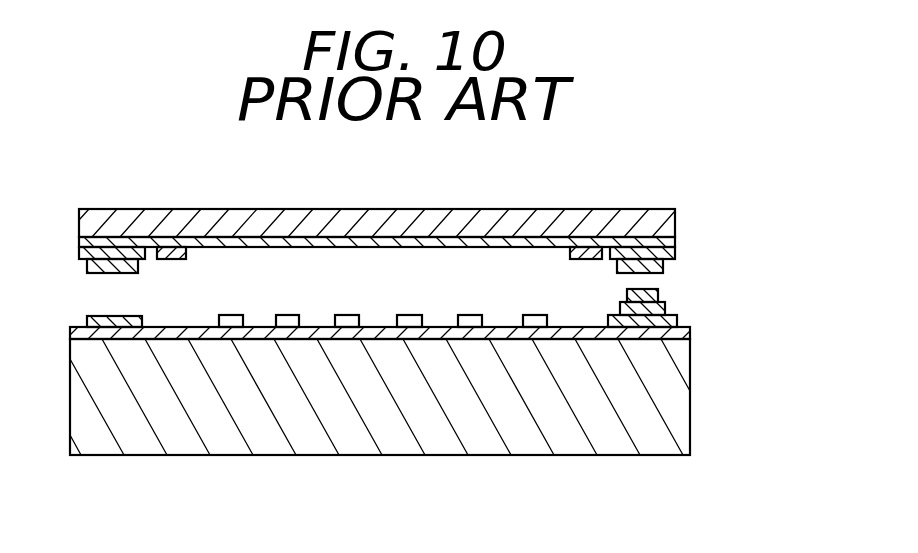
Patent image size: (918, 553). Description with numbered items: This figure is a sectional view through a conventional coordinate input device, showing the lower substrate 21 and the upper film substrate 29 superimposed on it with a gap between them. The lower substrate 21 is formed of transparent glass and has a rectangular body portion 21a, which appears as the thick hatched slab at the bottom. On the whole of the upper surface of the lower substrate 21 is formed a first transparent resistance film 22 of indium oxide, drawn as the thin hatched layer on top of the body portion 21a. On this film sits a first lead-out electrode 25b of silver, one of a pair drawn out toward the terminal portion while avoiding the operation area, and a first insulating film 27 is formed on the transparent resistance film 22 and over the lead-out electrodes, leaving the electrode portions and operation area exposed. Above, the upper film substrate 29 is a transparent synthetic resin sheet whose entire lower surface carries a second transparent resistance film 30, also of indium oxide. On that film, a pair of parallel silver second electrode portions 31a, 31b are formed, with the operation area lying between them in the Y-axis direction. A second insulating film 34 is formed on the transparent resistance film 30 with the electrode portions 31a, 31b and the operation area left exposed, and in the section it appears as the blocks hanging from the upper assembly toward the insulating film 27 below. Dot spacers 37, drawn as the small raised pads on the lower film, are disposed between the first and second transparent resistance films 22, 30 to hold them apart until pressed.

The lower substrate 21 is at (128, 463).
The body portion 21a is at (572, 440).
The first transparent resistance film 22 is at (680, 332).
The first lead-out electrode 25b is at (660, 290).
The first insulating film 27 is at (118, 317).
The upper film substrate 29 is at (512, 218).
The second transparent resistance film 30 is at (362, 243).
The second electrode portion 31a is at (180, 250).
The second electrode portion 31b is at (590, 250).
The second insulating film 34 is at (110, 277).
The dot spacers 37 is at (467, 320).